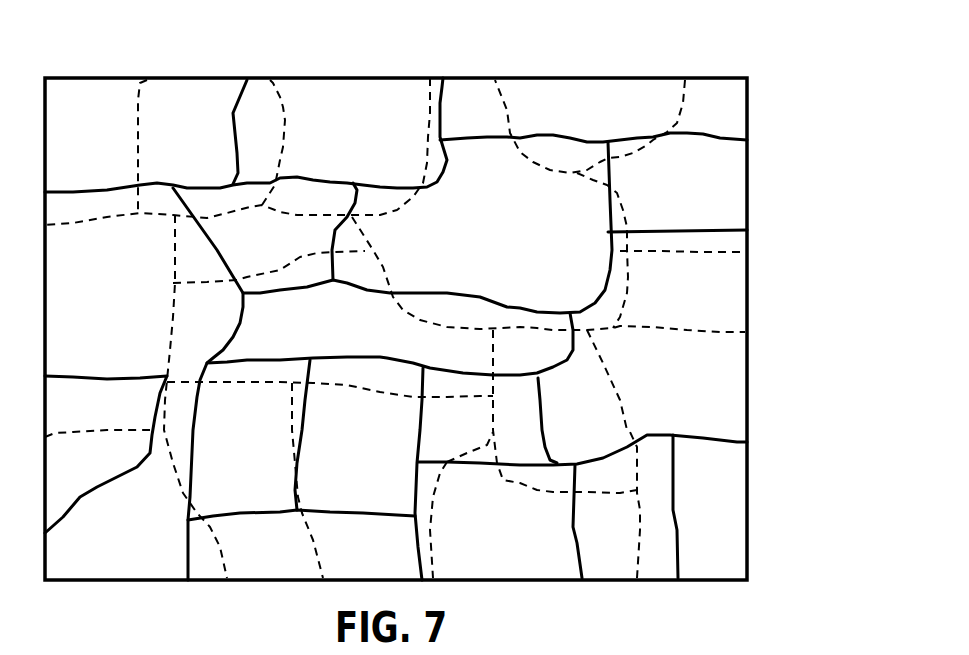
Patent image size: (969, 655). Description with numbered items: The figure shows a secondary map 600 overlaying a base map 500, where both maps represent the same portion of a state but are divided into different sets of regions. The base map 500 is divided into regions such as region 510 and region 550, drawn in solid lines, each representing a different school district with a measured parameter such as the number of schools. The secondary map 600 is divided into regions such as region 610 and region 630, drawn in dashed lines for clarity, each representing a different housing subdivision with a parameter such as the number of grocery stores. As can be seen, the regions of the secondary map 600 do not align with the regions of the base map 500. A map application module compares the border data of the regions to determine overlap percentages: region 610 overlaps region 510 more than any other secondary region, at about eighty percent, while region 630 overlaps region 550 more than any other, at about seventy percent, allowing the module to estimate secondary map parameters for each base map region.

The base map 500 is at (747, 200).
The region 510 is at (538, 265).
The region 550 is at (310, 193).
The secondary map 600 is at (451, 290).
The region 610 is at (530, 158).
The region 630 is at (228, 210).